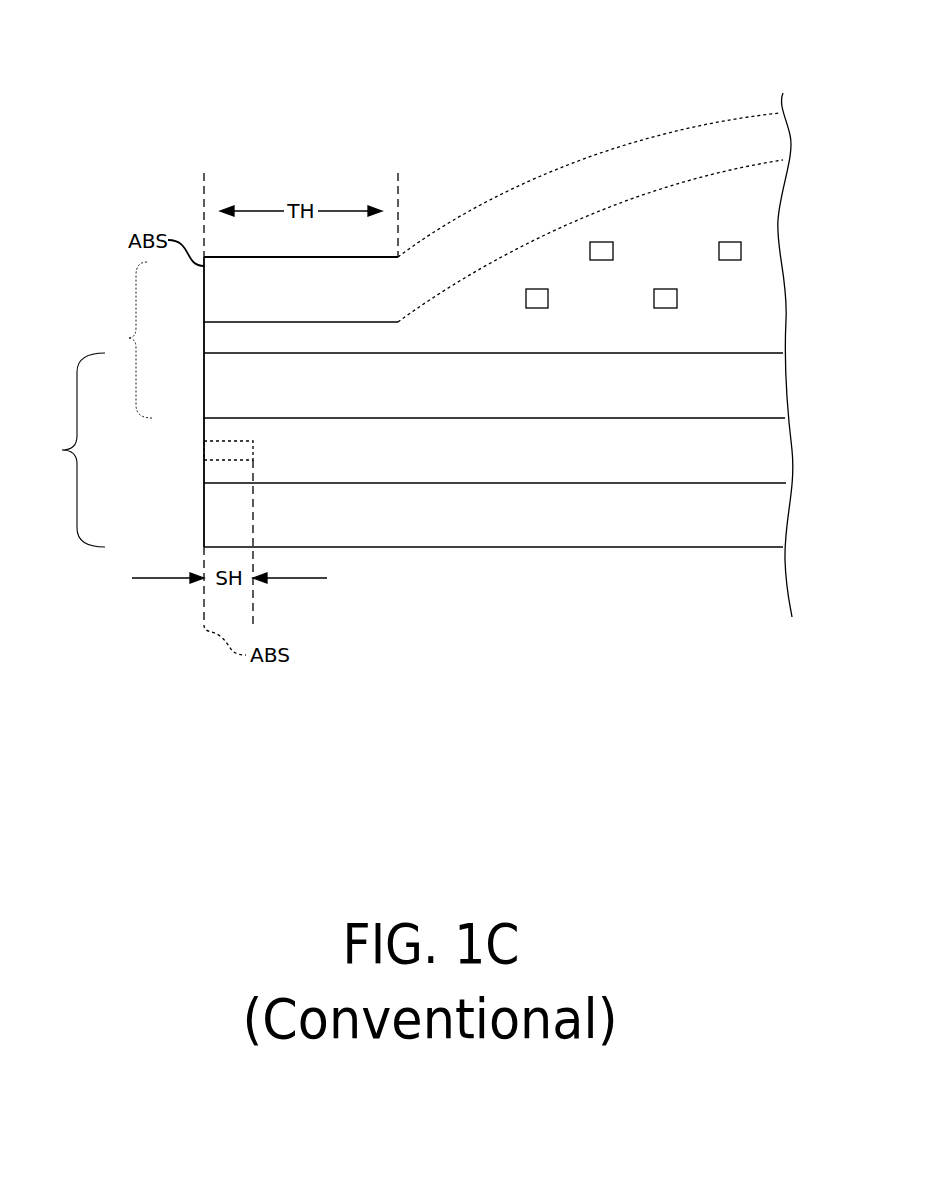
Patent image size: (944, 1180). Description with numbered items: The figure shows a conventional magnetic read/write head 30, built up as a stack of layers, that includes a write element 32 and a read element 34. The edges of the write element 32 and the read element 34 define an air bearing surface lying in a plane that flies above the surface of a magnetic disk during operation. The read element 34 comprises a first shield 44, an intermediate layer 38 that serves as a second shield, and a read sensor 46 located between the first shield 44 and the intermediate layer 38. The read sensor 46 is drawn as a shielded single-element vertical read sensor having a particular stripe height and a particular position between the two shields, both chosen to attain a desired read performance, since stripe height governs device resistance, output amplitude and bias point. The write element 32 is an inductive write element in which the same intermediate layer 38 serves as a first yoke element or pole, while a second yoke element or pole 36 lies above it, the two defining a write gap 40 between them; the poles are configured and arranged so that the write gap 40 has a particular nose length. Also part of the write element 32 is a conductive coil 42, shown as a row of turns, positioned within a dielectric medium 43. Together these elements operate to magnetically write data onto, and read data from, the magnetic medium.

The magnetic read/write head 30 is at (497, 68).
The write element 32 is at (124, 340).
The read element 34 is at (68, 450).
The second yoke element or pole 36 is at (205, 178).
The intermediate layer 38 is at (765, 396).
The write gap 40 is at (222, 343).
The conductive coil 42 is at (741, 242).
The dielectric medium 43 is at (767, 316).
The first shield 44 is at (586, 530).
The read sensor 46 is at (204, 455).